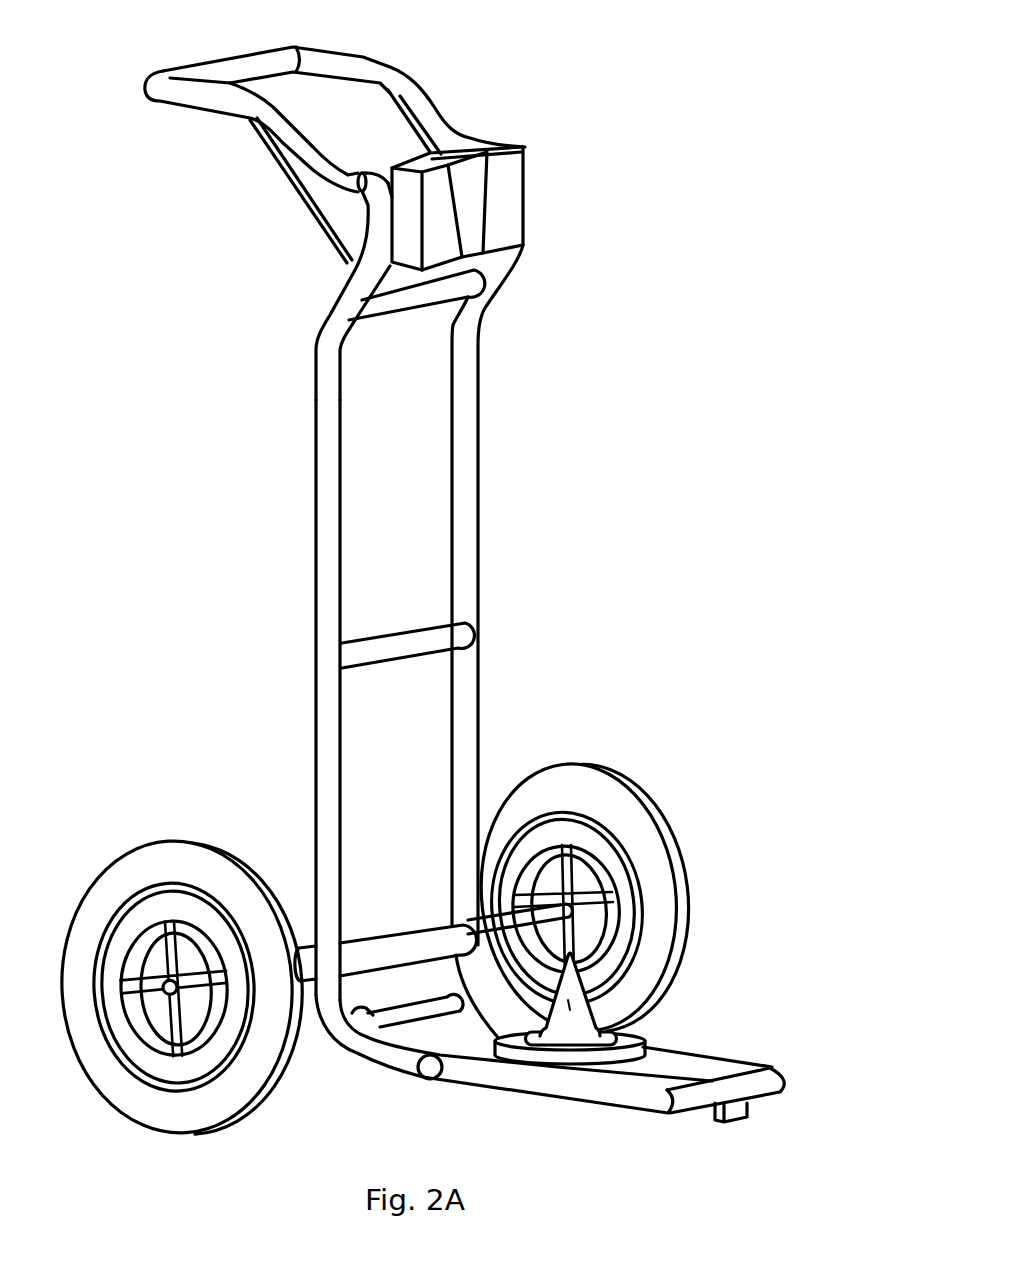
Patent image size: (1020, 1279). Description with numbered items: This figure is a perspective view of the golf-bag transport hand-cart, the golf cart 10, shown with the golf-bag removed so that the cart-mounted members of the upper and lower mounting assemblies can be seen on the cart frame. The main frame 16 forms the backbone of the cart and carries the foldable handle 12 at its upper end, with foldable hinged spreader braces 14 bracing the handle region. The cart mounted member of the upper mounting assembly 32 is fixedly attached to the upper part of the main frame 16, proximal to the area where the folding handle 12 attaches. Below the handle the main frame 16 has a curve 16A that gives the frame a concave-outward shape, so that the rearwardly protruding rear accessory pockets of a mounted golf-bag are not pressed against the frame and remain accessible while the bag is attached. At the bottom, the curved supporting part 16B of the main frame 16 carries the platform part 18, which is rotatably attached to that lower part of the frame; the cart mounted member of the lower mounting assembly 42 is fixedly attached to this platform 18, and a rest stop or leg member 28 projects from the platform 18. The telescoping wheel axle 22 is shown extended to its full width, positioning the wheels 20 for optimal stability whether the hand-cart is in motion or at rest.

The golf cart 10 is at (789, 23).
The foldable handle 12 is at (222, 100).
The foldable hinged spreader braces 14 is at (310, 213).
The main frame 16 is at (447, 657).
The curve of main frame 16A is at (343, 298).
The curved supporting part of main frame 16B is at (377, 1053).
The platform part 18 is at (530, 1078).
The wheels 20 is at (172, 858).
The telescoping wheel axle 22 is at (499, 905).
The rest stop or leg member 28 is at (740, 1113).
The cart mounted member of upper mounting assembly 32 is at (513, 178).
The cart mounted member of lower mounting assembly 42 is at (580, 957).